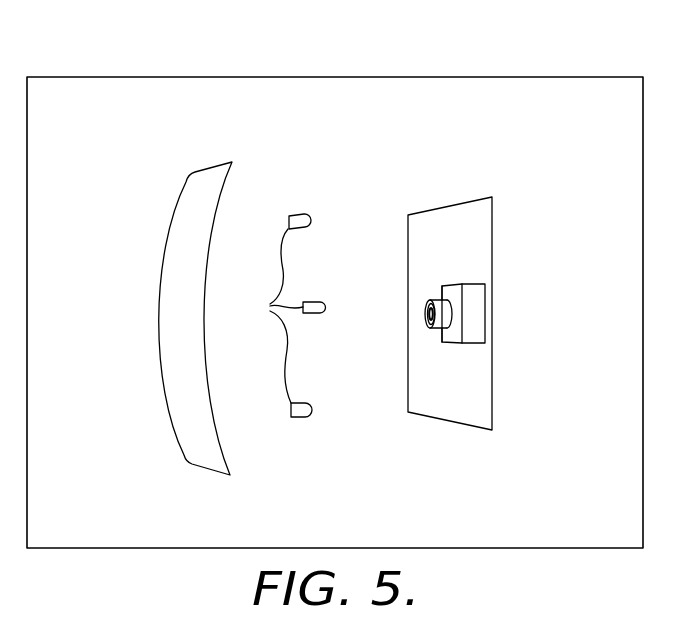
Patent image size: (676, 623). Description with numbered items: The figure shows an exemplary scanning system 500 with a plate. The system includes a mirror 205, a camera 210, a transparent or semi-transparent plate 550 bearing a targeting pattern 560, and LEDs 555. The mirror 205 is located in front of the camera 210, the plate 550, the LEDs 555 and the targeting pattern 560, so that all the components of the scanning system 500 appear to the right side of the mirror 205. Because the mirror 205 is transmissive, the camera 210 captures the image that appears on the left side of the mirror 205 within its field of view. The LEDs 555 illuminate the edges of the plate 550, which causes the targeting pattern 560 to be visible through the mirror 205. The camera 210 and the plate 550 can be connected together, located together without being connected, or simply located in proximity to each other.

The scanning system 500 is at (217, 63).
The mirror 205 is at (158, 316).
The LEDs 555 is at (270, 305).
The plate 550 is at (483, 398).
The targeting pattern 560 is at (482, 243).
The camera 210 is at (424, 313).